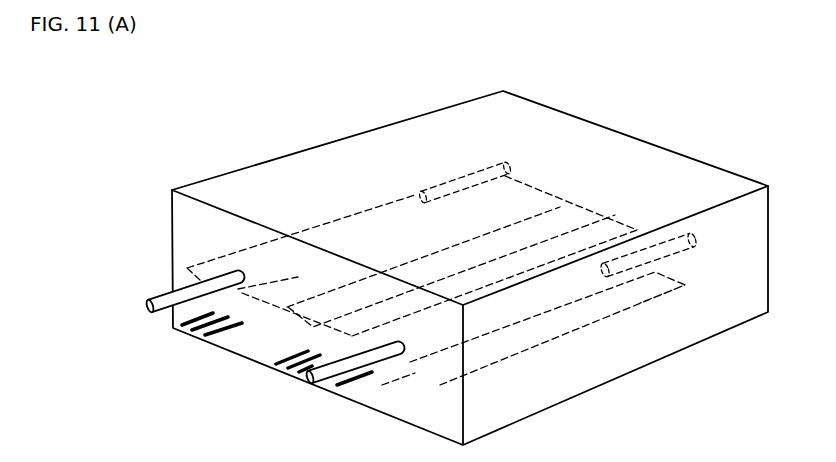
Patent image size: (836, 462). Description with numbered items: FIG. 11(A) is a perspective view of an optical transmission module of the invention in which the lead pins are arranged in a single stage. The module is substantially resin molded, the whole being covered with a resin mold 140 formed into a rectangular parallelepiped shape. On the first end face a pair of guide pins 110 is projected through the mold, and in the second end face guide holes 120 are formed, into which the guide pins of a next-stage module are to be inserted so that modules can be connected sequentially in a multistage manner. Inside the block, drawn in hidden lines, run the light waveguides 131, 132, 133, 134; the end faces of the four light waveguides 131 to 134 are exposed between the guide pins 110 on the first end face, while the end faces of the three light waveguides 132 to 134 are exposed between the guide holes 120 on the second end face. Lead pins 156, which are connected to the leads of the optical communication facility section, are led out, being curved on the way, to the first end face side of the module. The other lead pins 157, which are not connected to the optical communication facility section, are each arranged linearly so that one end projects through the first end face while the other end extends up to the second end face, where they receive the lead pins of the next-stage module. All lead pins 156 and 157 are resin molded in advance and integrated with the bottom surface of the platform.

The guide pins 110 is at (158, 300).
The guide holes 120 is at (505, 162).
The light waveguide 131 is at (273, 280).
The light waveguide 132 is at (330, 288).
The light waveguide 133 is at (580, 228).
The light waveguide 134 is at (466, 298).
The resin mold 140 is at (384, 124).
The lead pins 156 is at (185, 332).
The lead pins 157 is at (231, 335).